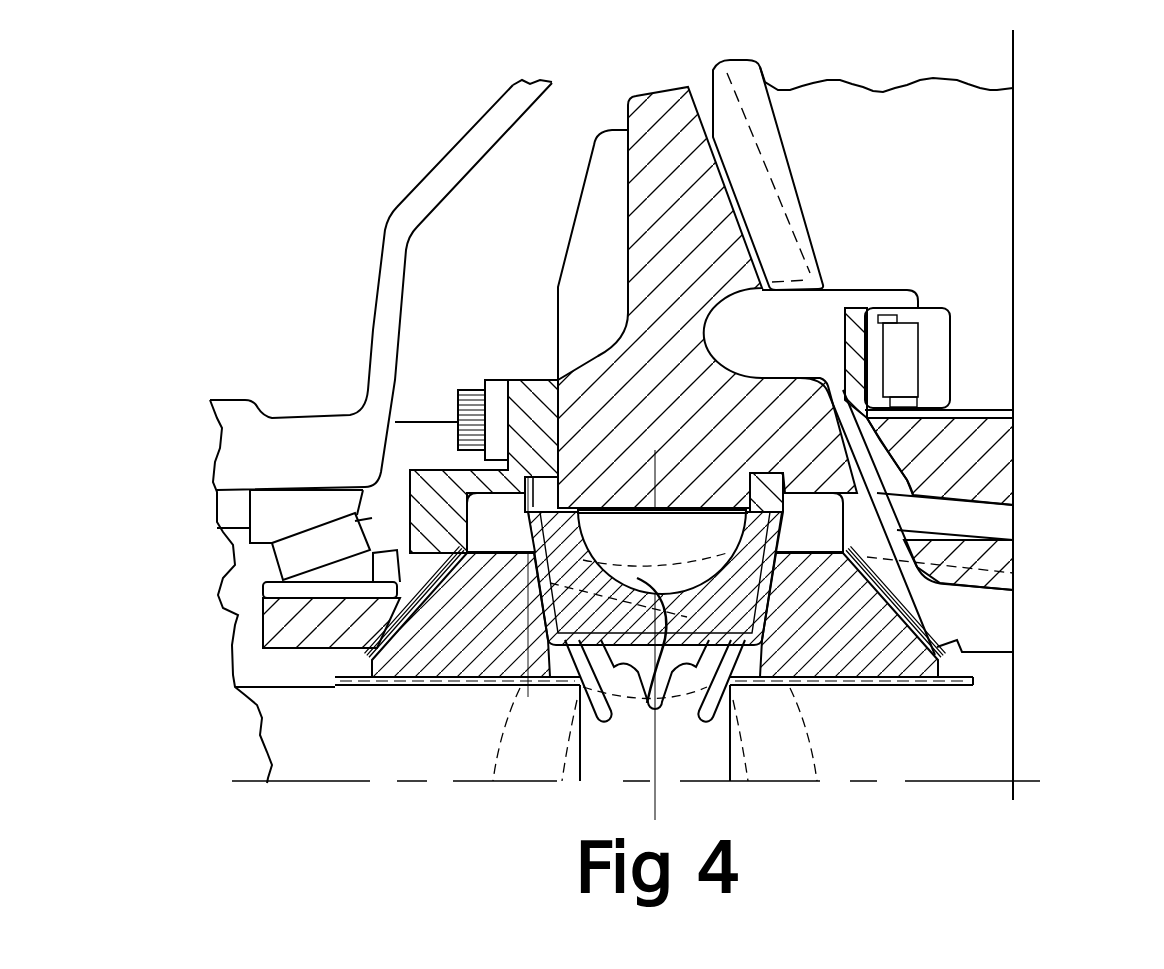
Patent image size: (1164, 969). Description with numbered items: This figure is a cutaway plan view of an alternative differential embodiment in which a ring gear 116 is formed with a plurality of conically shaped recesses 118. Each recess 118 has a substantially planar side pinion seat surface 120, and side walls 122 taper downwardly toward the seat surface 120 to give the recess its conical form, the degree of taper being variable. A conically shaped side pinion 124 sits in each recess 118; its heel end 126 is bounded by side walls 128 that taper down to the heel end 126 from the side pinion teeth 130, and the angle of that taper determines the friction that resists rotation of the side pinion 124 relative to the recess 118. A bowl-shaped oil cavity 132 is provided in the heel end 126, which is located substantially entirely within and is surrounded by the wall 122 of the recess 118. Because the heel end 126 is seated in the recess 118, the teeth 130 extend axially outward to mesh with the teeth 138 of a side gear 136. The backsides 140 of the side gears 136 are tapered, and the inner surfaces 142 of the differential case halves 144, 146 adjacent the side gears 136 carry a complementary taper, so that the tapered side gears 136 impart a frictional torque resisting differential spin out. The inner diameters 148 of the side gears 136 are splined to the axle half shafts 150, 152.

The ring gear 116 is at (660, 93).
The conically shaped recess 118 is at (632, 505).
The side pinion seat surface 120 is at (578, 512).
The side wall 122 is at (768, 520).
The conically shaped side pinion 124 is at (533, 540).
The heel end 126 is at (545, 500).
The side wall 128 is at (750, 524).
The side pinion teeth 130 is at (757, 647).
The bowl-shaped oil cavity 132 is at (645, 690).
The side gear 136 is at (467, 667).
The teeth 138 is at (495, 563).
The backside 140 is at (393, 620).
The inner surface 142 is at (883, 587).
The differential case half 144 is at (305, 652).
The differential case half 146 is at (997, 660).
The inner diameter 148 is at (827, 683).
The axle half shaft 150 is at (283, 737).
The axle half shaft 152 is at (1013, 727).